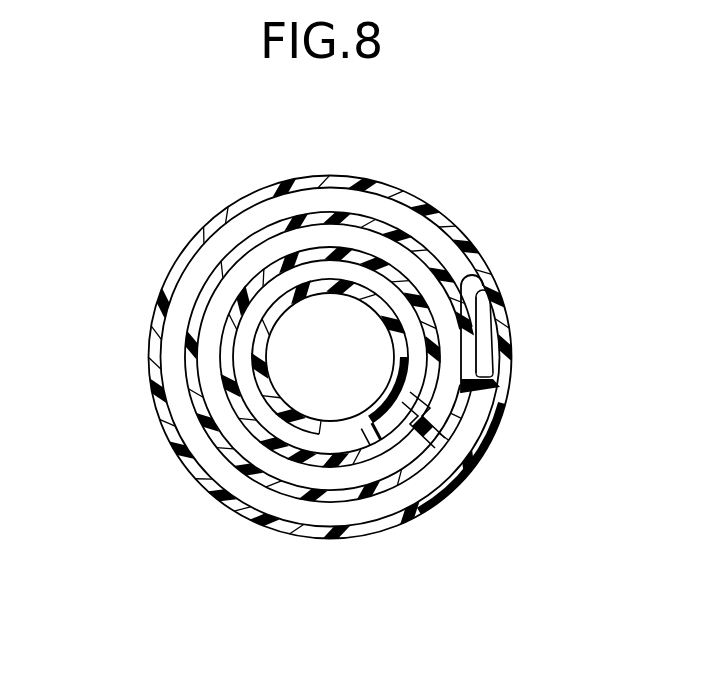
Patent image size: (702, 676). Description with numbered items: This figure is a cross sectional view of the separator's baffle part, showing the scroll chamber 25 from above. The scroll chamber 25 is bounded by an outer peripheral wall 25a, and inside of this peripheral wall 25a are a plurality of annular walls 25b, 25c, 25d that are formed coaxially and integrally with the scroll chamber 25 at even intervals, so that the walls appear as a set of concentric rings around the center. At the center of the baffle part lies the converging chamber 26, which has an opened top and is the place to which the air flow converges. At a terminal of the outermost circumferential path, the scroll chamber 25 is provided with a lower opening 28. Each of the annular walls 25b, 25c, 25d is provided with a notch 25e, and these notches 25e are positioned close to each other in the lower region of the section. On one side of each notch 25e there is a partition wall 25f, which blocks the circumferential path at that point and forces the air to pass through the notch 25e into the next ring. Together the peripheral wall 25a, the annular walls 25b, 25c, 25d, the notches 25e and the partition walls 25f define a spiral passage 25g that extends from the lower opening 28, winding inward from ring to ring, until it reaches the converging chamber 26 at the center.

The scroll chamber 25 is at (458, 212).
The peripheral wall 25a is at (150, 365).
The annular wall 25b is at (252, 242).
The annular wall 25c is at (245, 289).
The annular wall 25d is at (262, 349).
The notch 25e is at (480, 455).
The partition wall 25f is at (440, 421).
The spiral passage 25g is at (370, 256).
The converging chamber 26 is at (347, 367).
The lower opening 28 is at (482, 317).